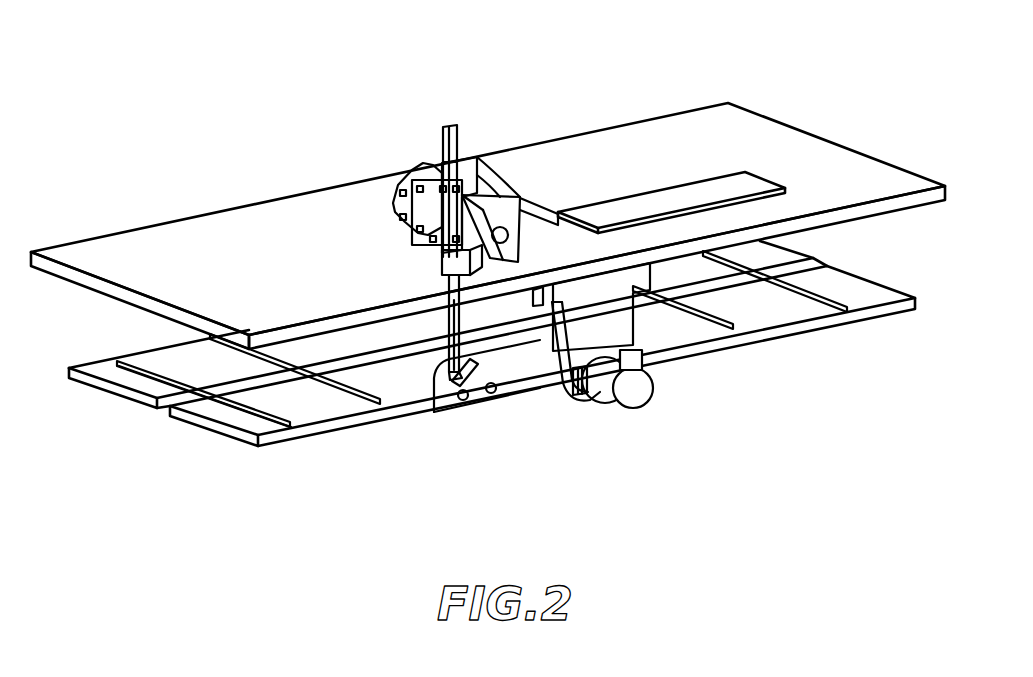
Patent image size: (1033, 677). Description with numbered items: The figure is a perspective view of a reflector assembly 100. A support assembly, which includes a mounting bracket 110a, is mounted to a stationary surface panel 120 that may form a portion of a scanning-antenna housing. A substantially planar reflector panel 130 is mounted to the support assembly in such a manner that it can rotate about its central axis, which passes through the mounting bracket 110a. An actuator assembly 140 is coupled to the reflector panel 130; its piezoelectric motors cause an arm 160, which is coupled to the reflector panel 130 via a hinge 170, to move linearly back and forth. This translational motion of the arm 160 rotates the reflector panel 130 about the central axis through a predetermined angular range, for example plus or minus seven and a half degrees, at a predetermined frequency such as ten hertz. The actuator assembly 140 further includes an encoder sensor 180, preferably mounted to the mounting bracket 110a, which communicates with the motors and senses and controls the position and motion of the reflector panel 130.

The reflector assembly 100 is at (488, 323).
The stationary surface panel 120 is at (841, 168).
The reflector panel 130 is at (262, 424).
The actuator assembly 140 is at (408, 130).
The arm 160 is at (456, 350).
The hinge 170 is at (472, 374).
The mounting bracket 110a is at (617, 322).
The encoder sensor 180 is at (644, 389).